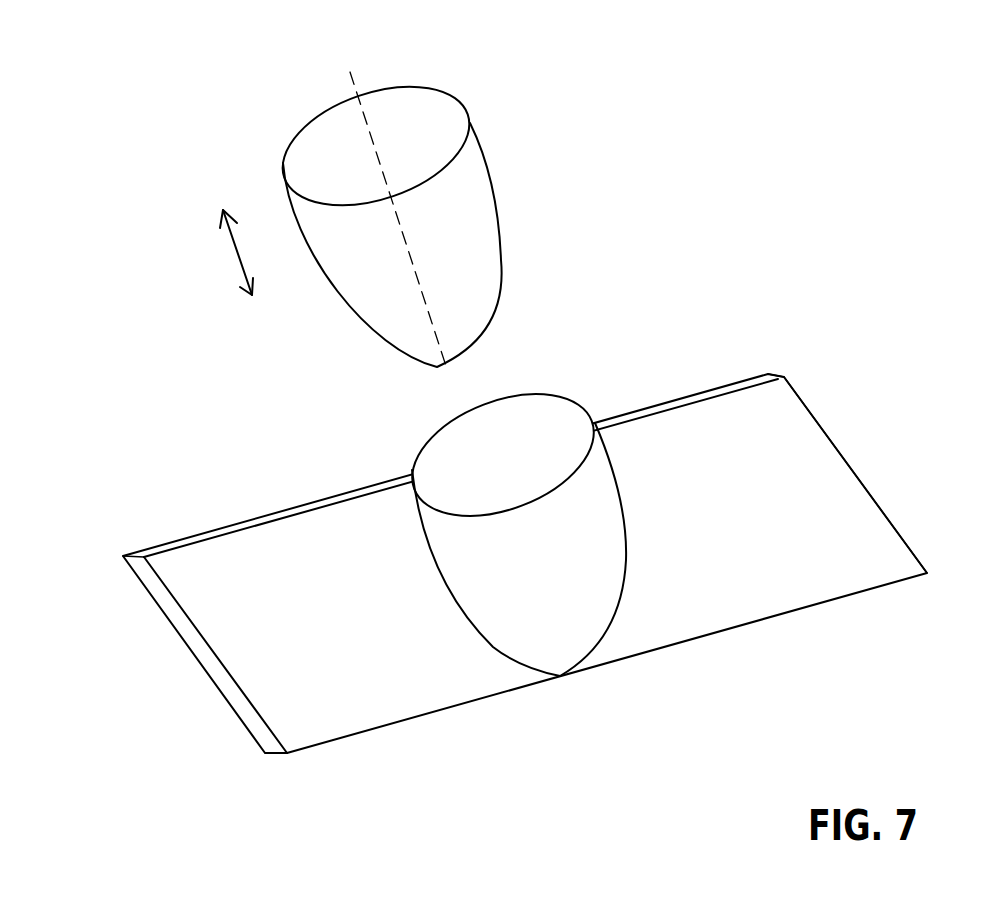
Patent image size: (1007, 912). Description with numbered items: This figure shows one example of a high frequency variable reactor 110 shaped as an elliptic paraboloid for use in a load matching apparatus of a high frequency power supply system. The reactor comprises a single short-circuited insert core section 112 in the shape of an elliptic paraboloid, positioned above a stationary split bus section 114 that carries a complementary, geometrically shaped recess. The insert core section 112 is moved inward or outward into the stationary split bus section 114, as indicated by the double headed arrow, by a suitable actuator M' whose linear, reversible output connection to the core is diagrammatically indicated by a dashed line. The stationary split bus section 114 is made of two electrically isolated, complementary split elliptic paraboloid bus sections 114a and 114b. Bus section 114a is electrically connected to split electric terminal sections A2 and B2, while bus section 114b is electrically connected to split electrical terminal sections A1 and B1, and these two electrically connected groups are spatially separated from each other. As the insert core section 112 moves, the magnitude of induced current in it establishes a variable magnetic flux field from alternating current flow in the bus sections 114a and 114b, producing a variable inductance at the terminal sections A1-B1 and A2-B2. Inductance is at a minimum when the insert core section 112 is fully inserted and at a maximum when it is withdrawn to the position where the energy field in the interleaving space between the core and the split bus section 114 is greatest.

The high frequency variable reactor 110 is at (878, 237).
The insert core section 112 is at (472, 238).
The stationary split bus section 114 is at (902, 437).
The split elliptic paraboloid bus section 114a is at (458, 438).
The split elliptic paraboloid bus section 114b is at (565, 632).
The split electrical terminal section A1 is at (423, 683).
The split electric terminal section A2 is at (148, 577).
The split electrical terminal section B1 is at (770, 582).
The split electric terminal section B2 is at (733, 387).
The actuator M' is at (387, 197).